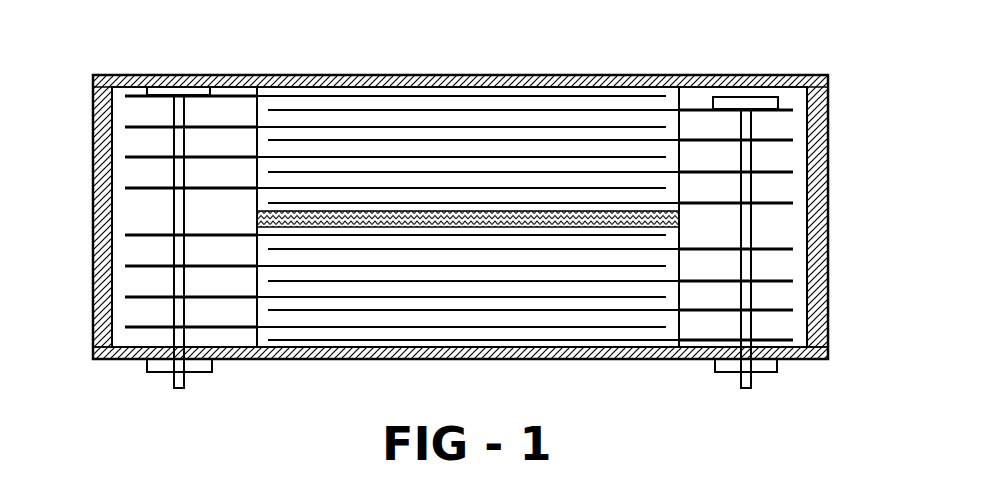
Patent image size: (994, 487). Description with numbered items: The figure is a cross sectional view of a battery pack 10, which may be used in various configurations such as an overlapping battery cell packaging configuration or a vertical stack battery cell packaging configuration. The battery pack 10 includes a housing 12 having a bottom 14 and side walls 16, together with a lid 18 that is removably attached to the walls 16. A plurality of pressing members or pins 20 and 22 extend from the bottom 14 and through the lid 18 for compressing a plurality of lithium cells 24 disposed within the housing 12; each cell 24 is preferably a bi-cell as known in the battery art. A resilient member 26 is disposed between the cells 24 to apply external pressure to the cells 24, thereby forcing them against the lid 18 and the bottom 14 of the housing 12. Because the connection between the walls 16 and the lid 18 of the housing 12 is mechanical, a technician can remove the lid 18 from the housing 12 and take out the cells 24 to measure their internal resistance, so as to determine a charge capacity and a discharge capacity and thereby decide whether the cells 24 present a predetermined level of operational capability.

The battery pack 10 is at (178, 58).
The housing 12 is at (834, 122).
The bottom 14 is at (452, 78).
The side walls 16 is at (100, 158).
The lid 18 is at (350, 360).
The pressing member 20 is at (173, 362).
The pressing member 22 is at (743, 362).
The lithium cells 24 is at (349, 171).
The resilient member 26 is at (618, 224).